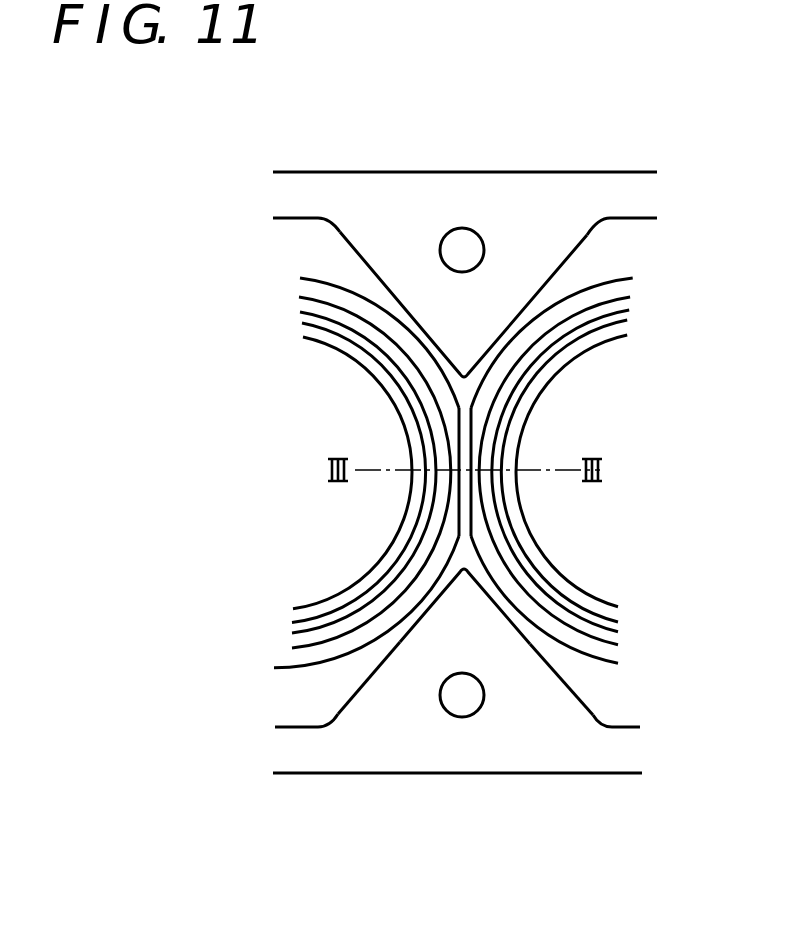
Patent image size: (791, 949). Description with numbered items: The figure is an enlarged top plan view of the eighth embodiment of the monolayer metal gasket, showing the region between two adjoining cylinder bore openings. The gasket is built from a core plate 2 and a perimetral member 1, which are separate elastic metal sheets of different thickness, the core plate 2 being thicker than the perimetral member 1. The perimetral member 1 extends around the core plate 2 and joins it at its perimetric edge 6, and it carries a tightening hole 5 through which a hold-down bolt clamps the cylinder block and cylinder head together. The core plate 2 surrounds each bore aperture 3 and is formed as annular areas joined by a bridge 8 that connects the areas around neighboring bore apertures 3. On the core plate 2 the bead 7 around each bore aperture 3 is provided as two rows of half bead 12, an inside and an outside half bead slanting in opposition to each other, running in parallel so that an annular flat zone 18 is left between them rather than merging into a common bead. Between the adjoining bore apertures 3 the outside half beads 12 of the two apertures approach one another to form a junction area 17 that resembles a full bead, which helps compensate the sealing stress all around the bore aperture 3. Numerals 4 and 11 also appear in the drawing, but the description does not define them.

The perimetral member 1 is at (417, 238).
The core plate 2 is at (342, 225).
The bore aperture 3 is at (407, 507).
The lower inclined surface 4 is at (403, 607).
The tightening hole 5 is at (467, 240).
The perimetric edge 6 is at (583, 235).
The bead 7 is at (417, 357).
The half bead 12 is at (442, 468).
The bridge 8 is at (452, 438).
The end portion 11 is at (298, 708).
The junction area 17 is at (464, 505).
The annular flat zone 18 is at (392, 595).